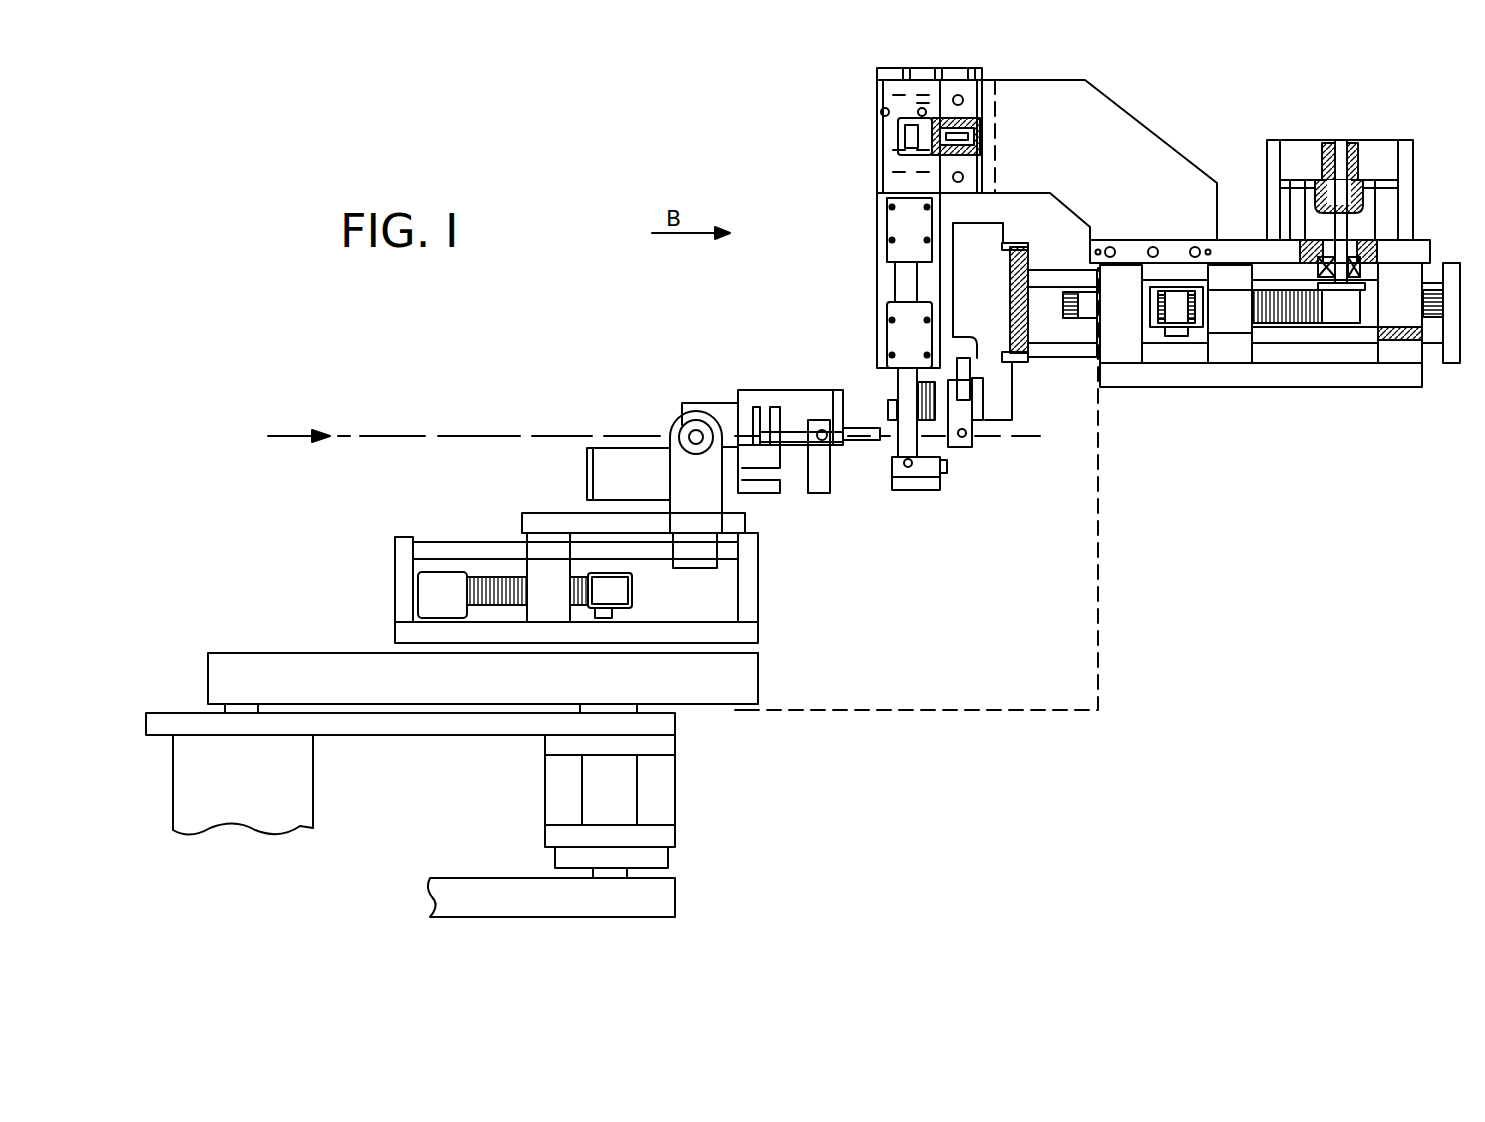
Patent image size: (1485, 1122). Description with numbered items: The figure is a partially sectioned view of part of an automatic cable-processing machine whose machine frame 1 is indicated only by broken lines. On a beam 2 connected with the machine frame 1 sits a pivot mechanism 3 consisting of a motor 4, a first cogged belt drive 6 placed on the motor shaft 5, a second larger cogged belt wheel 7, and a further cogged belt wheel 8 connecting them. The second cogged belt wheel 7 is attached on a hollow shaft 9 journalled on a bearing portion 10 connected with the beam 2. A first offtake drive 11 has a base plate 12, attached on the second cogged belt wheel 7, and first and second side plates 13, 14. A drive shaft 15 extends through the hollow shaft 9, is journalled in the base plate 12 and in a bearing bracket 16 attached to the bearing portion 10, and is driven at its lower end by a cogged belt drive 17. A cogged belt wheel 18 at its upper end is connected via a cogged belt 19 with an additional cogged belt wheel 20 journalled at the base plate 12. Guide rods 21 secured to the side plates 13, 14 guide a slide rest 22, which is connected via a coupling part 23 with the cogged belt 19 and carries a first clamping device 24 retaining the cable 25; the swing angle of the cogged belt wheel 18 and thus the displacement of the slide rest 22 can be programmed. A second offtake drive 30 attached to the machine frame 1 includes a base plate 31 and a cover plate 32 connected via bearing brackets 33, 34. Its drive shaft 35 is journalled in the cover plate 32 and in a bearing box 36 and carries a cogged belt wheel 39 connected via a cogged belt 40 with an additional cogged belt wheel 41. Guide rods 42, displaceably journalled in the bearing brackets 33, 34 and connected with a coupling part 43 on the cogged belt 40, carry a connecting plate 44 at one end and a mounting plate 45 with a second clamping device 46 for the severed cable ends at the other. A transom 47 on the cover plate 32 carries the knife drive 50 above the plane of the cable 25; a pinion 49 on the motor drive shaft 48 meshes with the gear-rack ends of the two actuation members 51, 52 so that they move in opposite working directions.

The machine frame 1 is at (955, 695).
The beam 2 is at (415, 730).
The pivot mechanism 3 is at (736, 707).
The motor 4 is at (305, 792).
The motor shaft 5 is at (235, 708).
The first cogged belt drive 6 is at (230, 667).
The second cogged belt wheel 7 is at (750, 667).
The further cogged belt wheel 8 is at (345, 695).
The hollow shaft 9 is at (630, 793).
The bearing portion 10 is at (670, 745).
The first offtake drive 11 is at (577, 576).
The base plate 12 is at (750, 630).
The first side plate 13 is at (398, 568).
The second side plate 14 is at (750, 570).
The drive shaft 15 is at (618, 872).
The bearing bracket 16 is at (660, 858).
The cogged belt drive 17 is at (470, 887).
The cogged belt wheel 18 is at (620, 595).
The cogged belt 19 is at (465, 580).
The additional cogged belt wheel 20 is at (425, 597).
The guide rods 21 is at (493, 547).
The slide rest 22 is at (540, 520).
The coupling part 23 is at (547, 612).
The first clamping device 24 is at (760, 395).
The cable 25 is at (362, 436).
The second offtake drive 30 is at (1256, 295).
The base plate 31 is at (1285, 375).
The cover plate 32 is at (1430, 252).
The bearing bracket 33 is at (1125, 278).
The bearing bracket 34 is at (1410, 312).
The drive shaft 35 is at (1345, 228).
The bearing box 36 is at (1365, 210).
The cogged belt wheel 39 is at (1345, 312).
The cogged belt 40 is at (1275, 305).
The additional cogged belt wheel 41 is at (1160, 327).
The guide rods 42 is at (1022, 280).
The coupling part 43 is at (1237, 300).
The connecting plate 44 is at (1450, 360).
The mounting plate 45 is at (1020, 362).
The second clamping device 46 is at (1000, 418).
The transom 47 is at (1062, 95).
The drive shaft 48 is at (985, 135).
The pinion 49 is at (900, 128).
The knife drive 50 is at (885, 230).
The first actuation member 51 is at (856, 372).
The second actuation member 52 is at (905, 290).